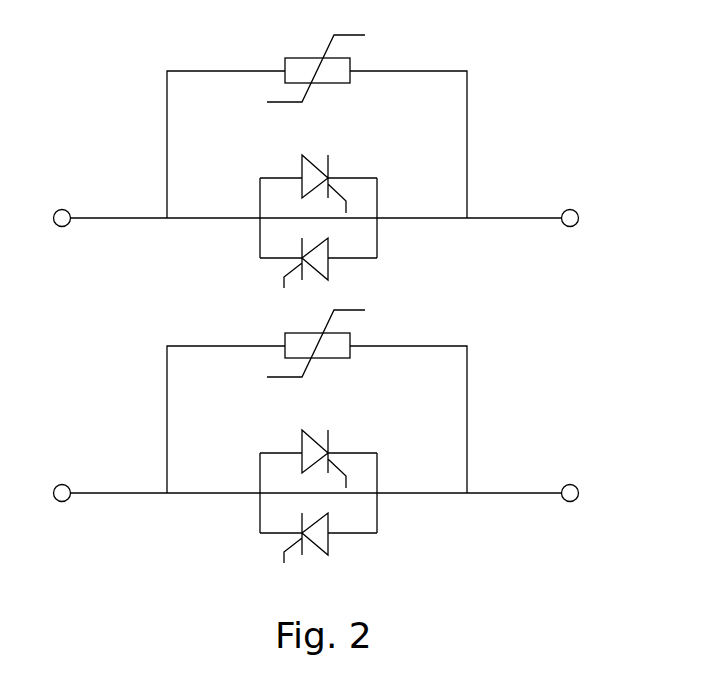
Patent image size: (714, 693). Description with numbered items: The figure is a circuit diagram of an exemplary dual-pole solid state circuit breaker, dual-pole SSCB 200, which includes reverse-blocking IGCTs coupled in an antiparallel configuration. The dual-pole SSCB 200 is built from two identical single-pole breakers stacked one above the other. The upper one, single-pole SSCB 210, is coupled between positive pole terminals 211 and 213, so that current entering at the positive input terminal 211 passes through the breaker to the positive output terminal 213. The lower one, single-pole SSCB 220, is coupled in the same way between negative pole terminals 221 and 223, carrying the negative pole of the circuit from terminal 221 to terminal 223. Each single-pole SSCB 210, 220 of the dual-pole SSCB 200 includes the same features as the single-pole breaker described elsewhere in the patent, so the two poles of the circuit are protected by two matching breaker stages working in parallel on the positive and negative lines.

The dual-pole SSCB 200 is at (600, 77).
The single-pole SSCB 210 is at (162, 283).
The single-pole SSCB 220 is at (162, 558).
The positive pole terminal 211 is at (56, 227).
The positive pole terminal 213 is at (565, 227).
The negative pole terminal 221 is at (56, 502).
The negative pole terminal 223 is at (565, 502).